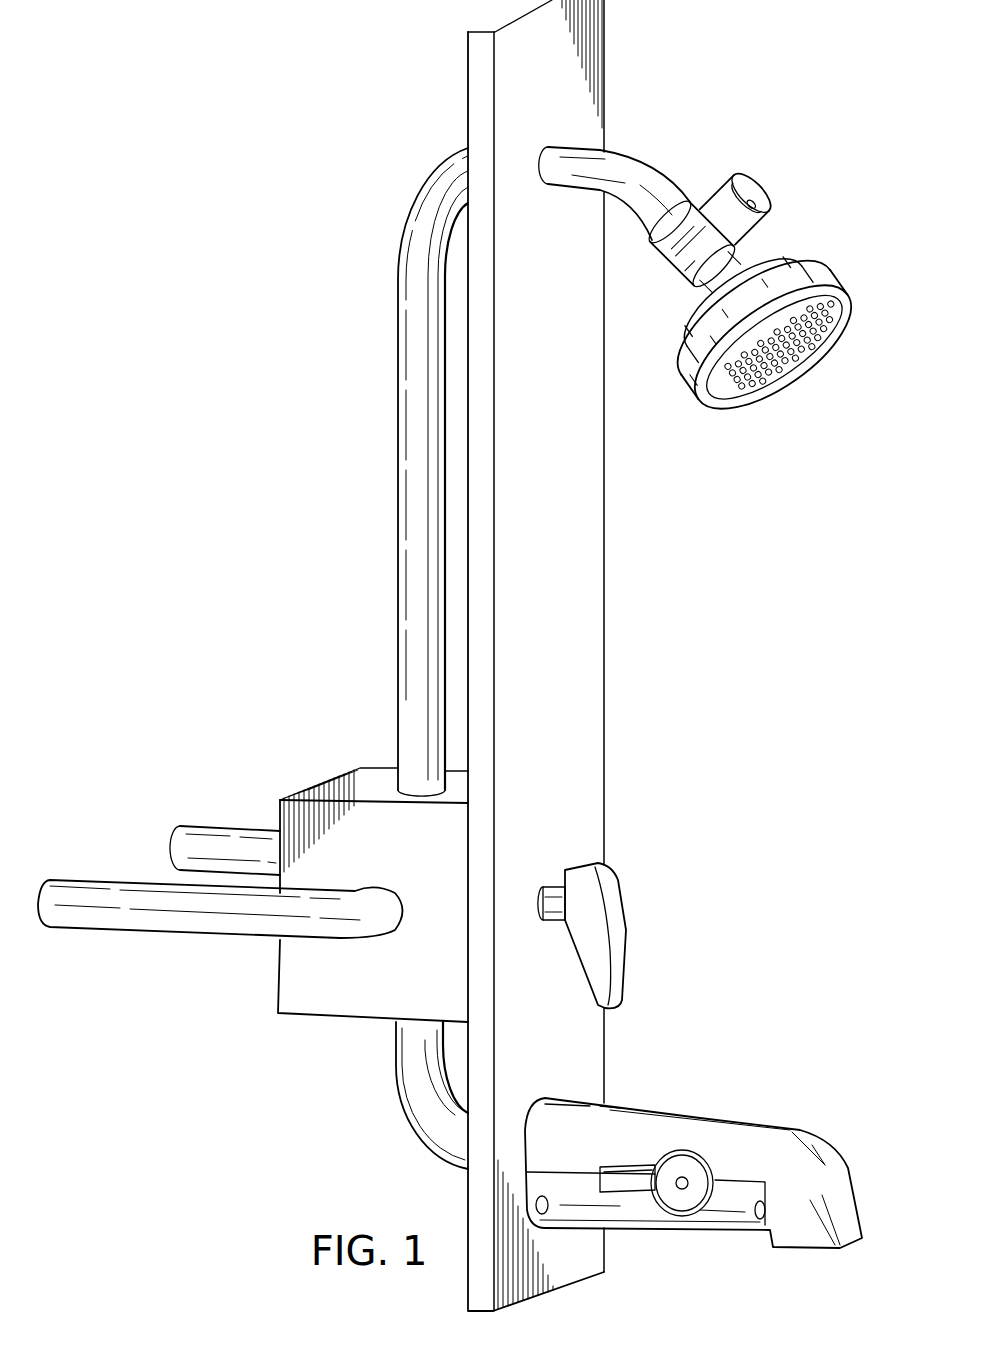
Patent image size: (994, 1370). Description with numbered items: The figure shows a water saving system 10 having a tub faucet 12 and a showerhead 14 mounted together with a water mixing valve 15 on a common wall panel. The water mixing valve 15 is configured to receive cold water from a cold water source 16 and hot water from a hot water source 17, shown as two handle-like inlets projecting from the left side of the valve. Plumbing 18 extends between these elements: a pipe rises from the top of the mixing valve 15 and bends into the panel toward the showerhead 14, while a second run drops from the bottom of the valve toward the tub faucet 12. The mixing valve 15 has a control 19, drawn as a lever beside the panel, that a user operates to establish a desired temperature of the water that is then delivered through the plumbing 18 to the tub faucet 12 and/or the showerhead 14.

The water saving system 10 is at (188, 105).
The tub faucet 12 is at (718, 1122).
The showerhead 14 is at (834, 276).
The water mixing valve 15 is at (278, 975).
The cold water source 16 is at (212, 828).
The hot water source 17 is at (192, 942).
The plumbing 18 is at (398, 445).
The control 19 is at (627, 932).